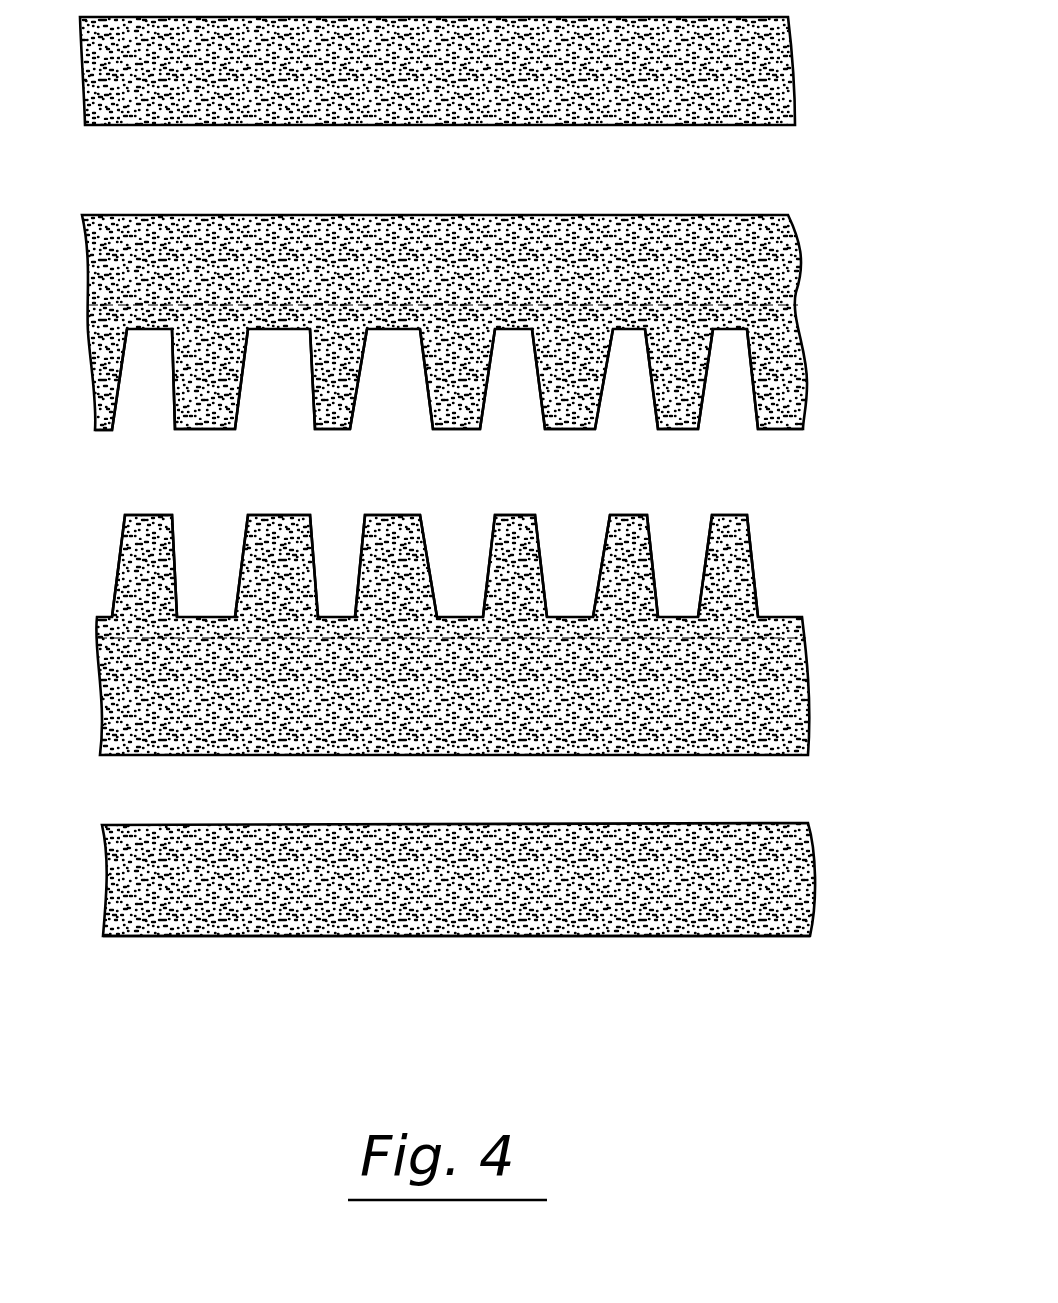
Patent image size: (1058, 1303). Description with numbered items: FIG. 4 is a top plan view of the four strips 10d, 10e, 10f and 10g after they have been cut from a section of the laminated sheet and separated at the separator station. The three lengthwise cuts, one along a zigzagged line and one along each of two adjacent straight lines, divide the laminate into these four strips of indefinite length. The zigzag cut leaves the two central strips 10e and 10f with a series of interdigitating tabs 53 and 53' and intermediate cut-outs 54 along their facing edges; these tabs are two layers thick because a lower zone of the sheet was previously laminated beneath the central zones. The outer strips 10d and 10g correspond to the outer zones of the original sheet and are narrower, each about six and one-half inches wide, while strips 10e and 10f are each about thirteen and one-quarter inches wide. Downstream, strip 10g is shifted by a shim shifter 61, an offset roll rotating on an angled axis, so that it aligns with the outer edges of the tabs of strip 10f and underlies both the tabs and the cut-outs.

The strip 10d is at (792, 43).
The strip 10e is at (802, 353).
The strip 10f is at (812, 683).
The strip 10g is at (807, 845).
The interdigitating tab 53 is at (482, 379).
The interdigitating tab 53' is at (452, 539).
The cut-out 54 is at (835, 592).
The shim shifter 61 is at (537, 937).